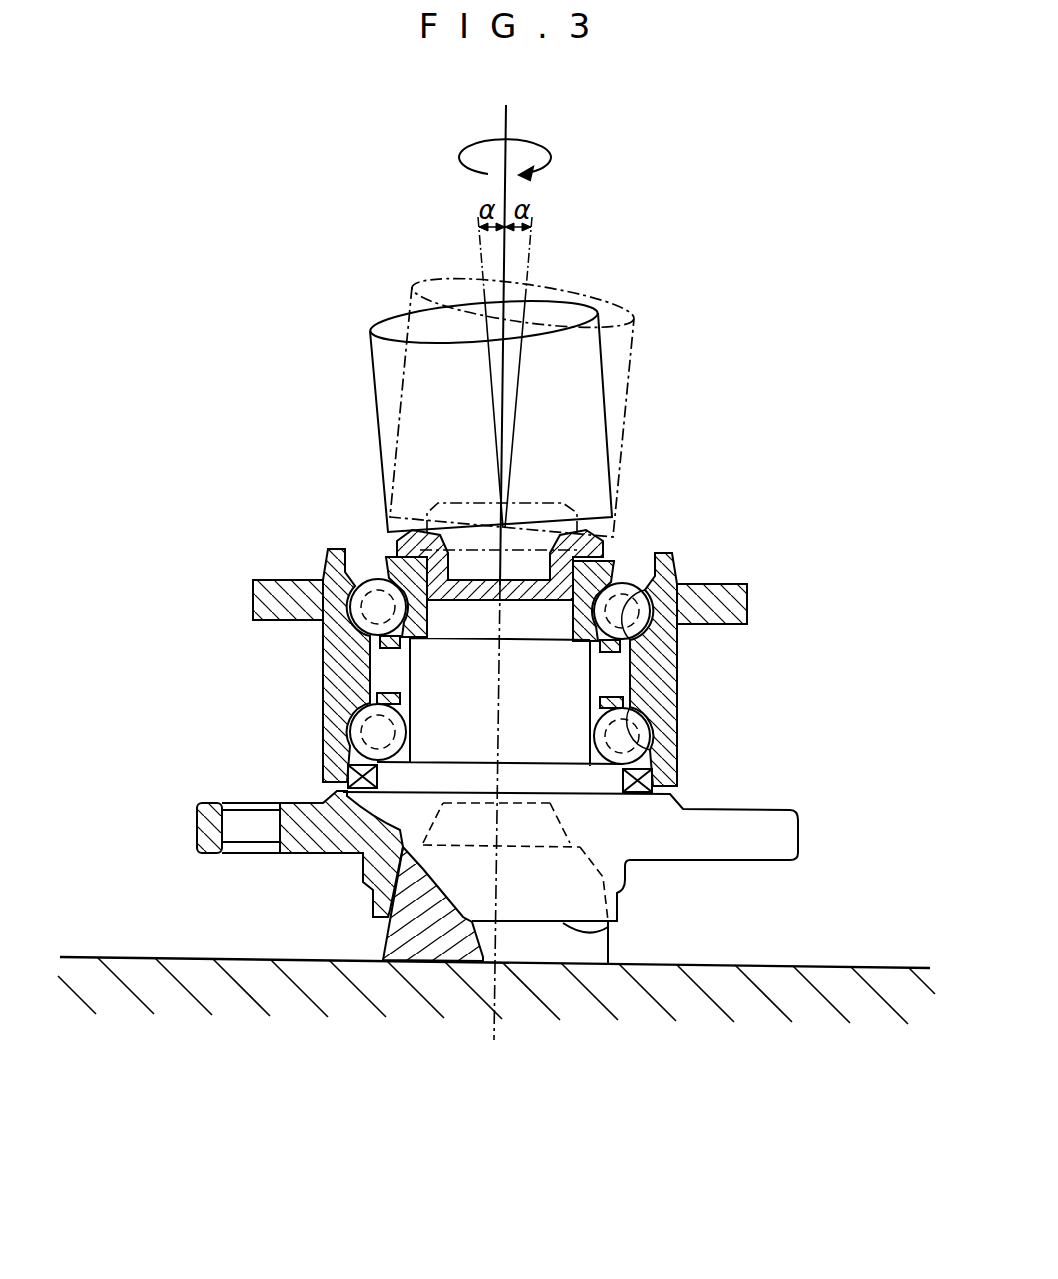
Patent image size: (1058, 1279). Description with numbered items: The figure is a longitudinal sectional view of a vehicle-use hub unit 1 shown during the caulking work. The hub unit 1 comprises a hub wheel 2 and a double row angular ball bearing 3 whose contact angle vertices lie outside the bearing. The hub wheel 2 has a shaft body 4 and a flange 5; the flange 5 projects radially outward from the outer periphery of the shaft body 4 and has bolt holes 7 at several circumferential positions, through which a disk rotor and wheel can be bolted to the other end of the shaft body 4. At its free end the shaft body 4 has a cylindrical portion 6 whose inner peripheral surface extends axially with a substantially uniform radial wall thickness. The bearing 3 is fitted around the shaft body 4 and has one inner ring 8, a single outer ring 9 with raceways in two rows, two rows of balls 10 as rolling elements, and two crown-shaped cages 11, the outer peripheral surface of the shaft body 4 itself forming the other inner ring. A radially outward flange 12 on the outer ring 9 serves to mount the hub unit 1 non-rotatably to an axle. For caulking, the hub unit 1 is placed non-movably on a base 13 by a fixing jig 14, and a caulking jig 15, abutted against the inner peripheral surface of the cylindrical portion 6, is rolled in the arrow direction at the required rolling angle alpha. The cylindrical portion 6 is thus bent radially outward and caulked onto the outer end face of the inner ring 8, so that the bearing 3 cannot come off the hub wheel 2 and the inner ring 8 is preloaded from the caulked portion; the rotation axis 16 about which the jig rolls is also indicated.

The hub unit 1 is at (758, 562).
The hub wheel 2 is at (469, 727).
The double row angular ball bearing 3 is at (325, 725).
The shaft body 4 is at (555, 685).
The flange 5 is at (197, 832).
The cylindrical portion 6 is at (600, 552).
The bolt holes 7 is at (250, 817).
The inner ring 8 is at (390, 553).
The outer ring 9 is at (325, 667).
The balls 10 is at (368, 582).
The crown-shaped cages 11 is at (647, 652).
The radially outward flange 12 is at (258, 583).
The base 13 is at (818, 964).
The fixing jig 14 is at (608, 946).
The caulking jig 15 is at (623, 298).
The rotation axis 16 is at (490, 1023).